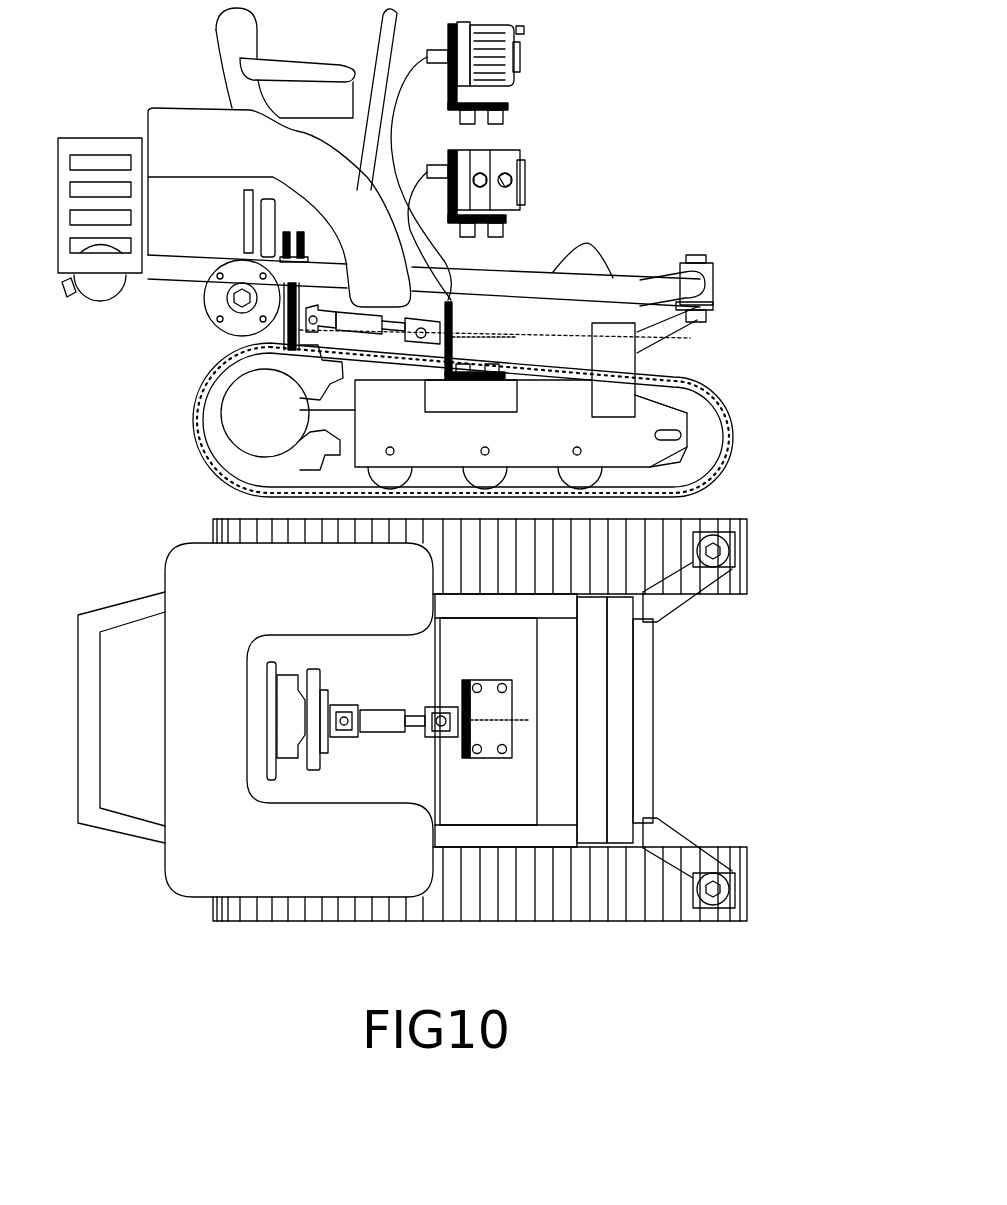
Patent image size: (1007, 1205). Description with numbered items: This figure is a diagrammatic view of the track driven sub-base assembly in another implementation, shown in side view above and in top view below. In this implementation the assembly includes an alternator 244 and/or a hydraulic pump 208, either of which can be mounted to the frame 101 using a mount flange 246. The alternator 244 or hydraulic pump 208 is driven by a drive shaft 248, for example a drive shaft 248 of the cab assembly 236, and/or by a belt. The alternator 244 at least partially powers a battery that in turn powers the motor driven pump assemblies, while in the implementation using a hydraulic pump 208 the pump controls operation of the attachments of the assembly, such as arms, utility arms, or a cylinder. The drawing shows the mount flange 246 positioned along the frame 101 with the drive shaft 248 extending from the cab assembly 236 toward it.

The alternator 244 is at (493, 22).
The hydraulic pump 208 is at (490, 150).
The mount flange 246 is at (482, 368).
The cab assembly 236 is at (718, 265).
The drive shaft 248 is at (412, 327).
The frame 101 is at (537, 770).